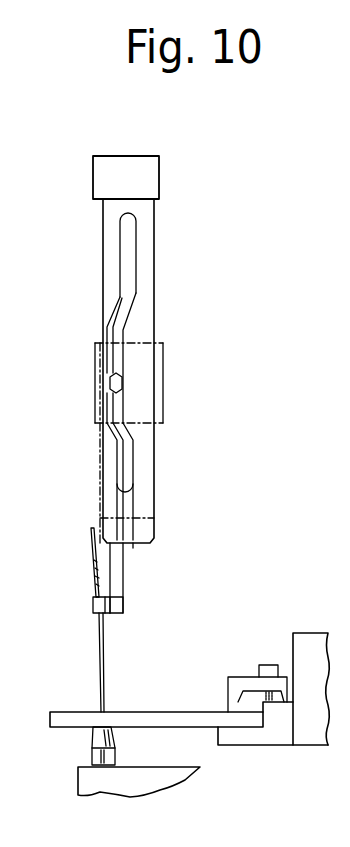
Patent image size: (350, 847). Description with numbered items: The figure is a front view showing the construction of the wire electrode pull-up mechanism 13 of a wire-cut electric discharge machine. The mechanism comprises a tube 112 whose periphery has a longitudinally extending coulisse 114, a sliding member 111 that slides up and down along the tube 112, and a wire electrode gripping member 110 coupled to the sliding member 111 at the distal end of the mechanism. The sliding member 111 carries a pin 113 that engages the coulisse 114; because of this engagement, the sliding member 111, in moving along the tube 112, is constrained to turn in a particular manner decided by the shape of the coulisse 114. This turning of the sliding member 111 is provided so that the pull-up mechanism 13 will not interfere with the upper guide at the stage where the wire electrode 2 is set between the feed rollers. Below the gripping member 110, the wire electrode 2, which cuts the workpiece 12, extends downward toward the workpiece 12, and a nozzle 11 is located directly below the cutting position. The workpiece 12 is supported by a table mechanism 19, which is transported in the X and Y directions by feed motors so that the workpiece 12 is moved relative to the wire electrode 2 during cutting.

The wire electrode pull-up mechanism 13 is at (70, 319).
The coulisse 114 is at (120, 237).
The tube 112 is at (155, 503).
The pin 113 is at (123, 382).
The sliding member 111 is at (163, 353).
The wire electrode gripping member 110 is at (93, 605).
The wire electrode 2 is at (105, 669).
The workpiece 12 is at (140, 727).
The nozzle 11 is at (92, 740).
The table mechanism 19 is at (310, 735).